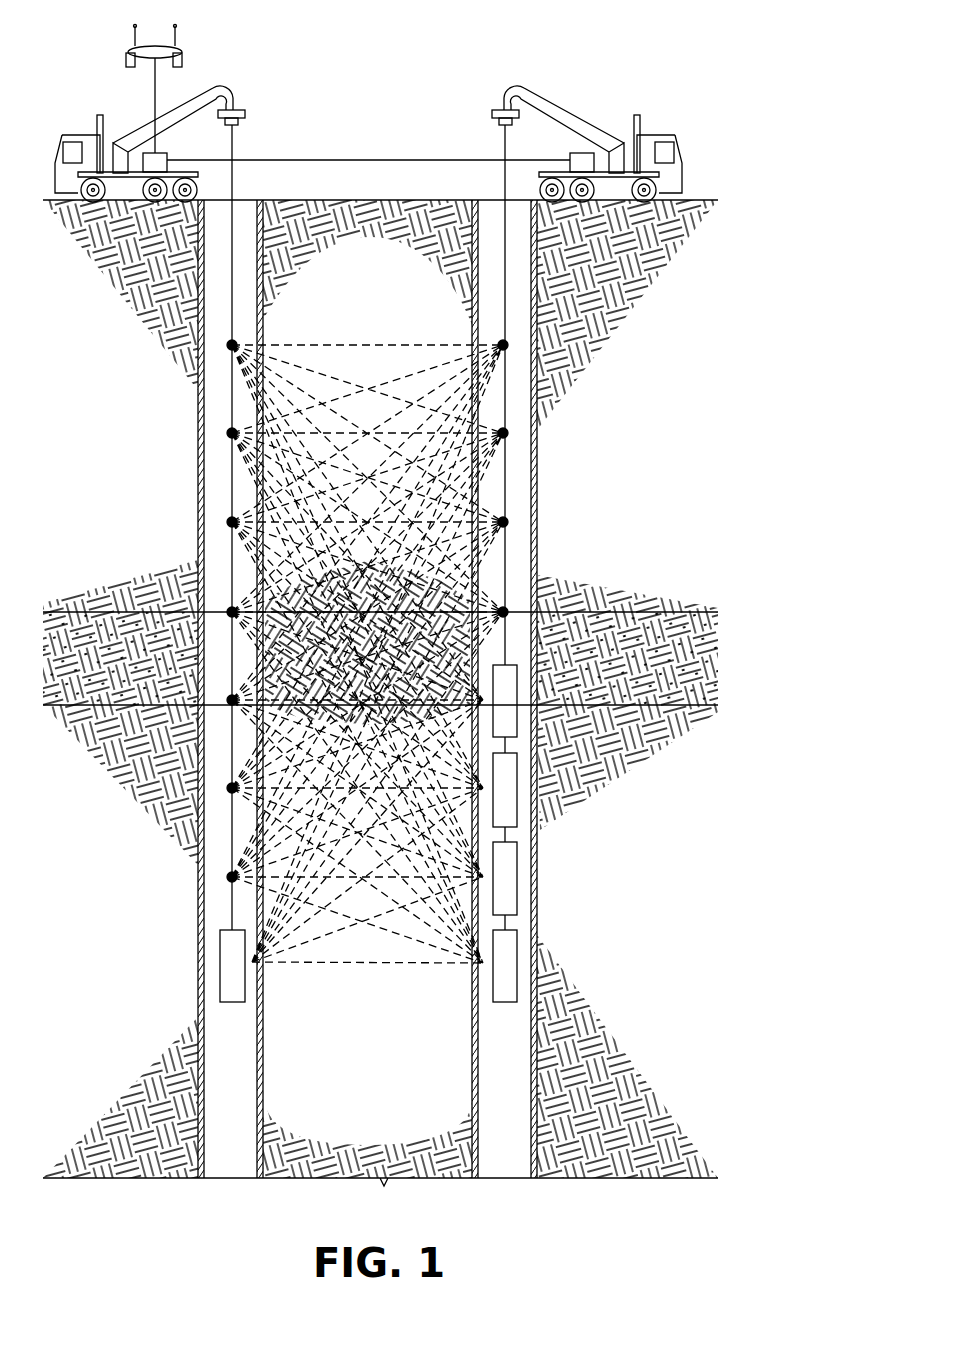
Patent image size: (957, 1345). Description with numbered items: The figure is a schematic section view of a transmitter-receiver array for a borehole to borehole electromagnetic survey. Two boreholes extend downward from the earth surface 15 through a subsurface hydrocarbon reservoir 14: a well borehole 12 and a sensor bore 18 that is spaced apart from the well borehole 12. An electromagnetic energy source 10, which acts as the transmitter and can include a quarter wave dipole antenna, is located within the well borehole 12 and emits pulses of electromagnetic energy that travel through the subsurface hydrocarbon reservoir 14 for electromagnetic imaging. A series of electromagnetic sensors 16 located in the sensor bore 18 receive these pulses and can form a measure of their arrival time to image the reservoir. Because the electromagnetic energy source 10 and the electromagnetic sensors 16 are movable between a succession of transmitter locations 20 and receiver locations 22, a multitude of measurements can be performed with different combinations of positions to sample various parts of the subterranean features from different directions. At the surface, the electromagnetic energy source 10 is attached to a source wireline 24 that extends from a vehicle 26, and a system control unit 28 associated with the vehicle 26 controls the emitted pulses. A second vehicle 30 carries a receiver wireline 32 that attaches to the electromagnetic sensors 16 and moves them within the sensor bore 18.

The electromagnetic energy source 10 is at (222, 970).
The well borehole 12 is at (204, 882).
The subsurface hydrocarbon reservoir 14 is at (680, 655).
The earth surface 15 is at (695, 198).
The electromagnetic sensors 16 is at (520, 872).
The sensor bore 18 is at (532, 390).
The transmitter locations 20 is at (228, 520).
The receiver locations 22 is at (508, 521).
The source wireline 24 is at (230, 408).
The vehicle 26 is at (238, 76).
The system control unit 28 is at (128, 48).
The second vehicle 30 is at (676, 114).
The receiver wireline 32 is at (507, 297).